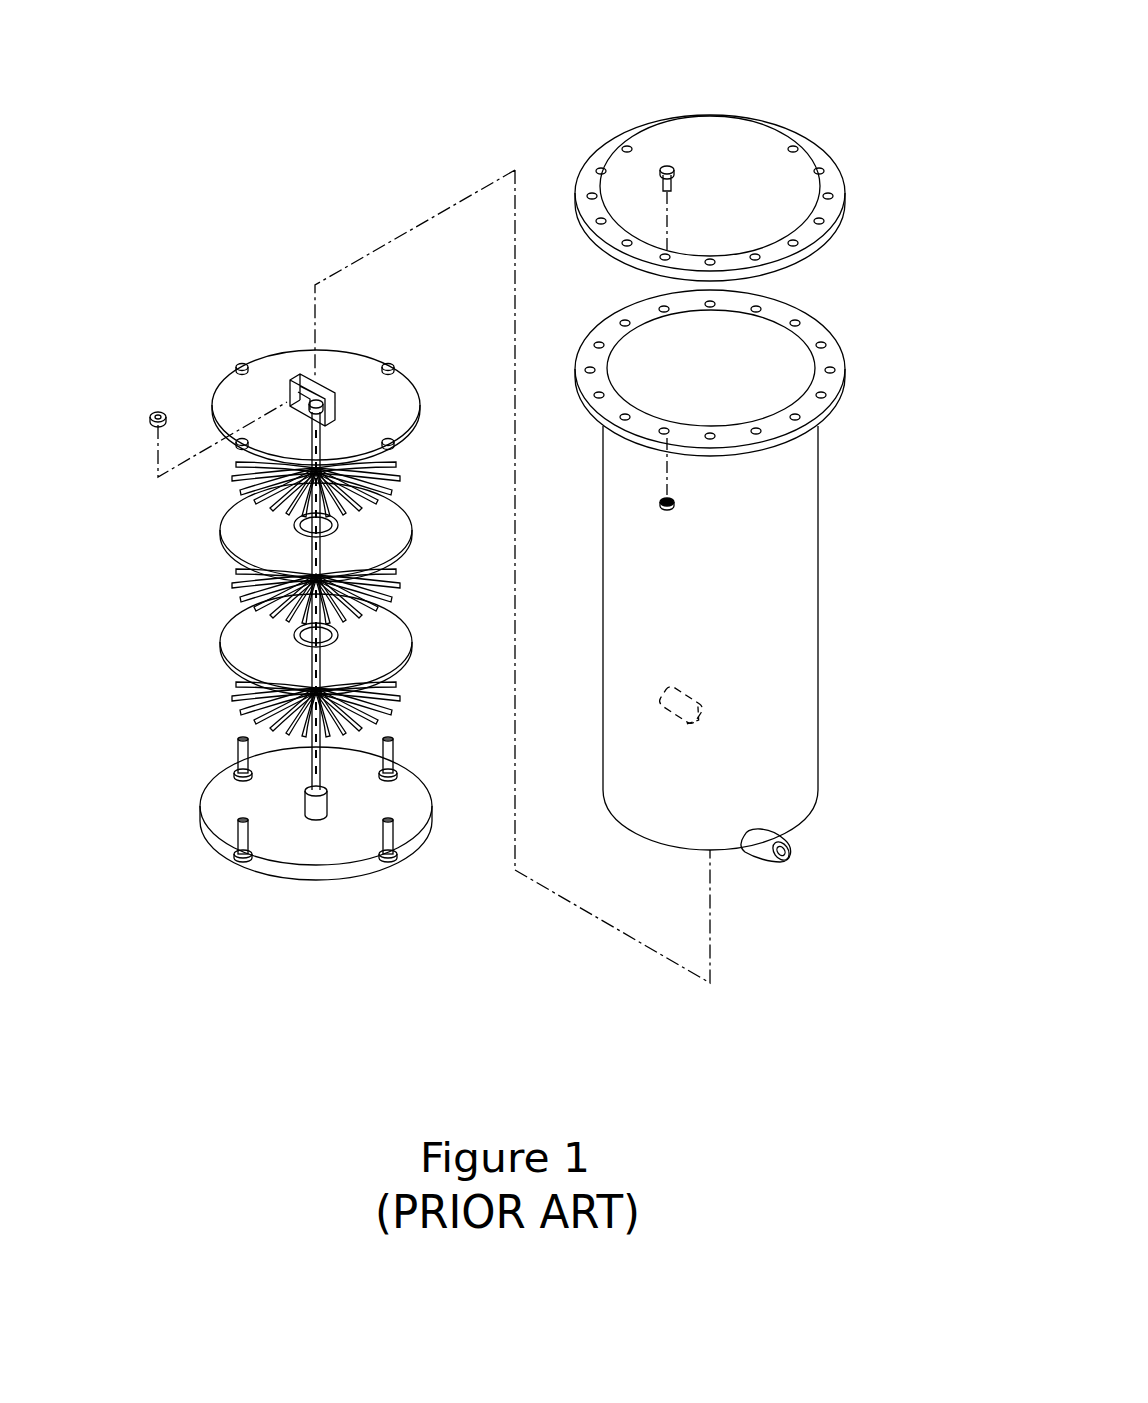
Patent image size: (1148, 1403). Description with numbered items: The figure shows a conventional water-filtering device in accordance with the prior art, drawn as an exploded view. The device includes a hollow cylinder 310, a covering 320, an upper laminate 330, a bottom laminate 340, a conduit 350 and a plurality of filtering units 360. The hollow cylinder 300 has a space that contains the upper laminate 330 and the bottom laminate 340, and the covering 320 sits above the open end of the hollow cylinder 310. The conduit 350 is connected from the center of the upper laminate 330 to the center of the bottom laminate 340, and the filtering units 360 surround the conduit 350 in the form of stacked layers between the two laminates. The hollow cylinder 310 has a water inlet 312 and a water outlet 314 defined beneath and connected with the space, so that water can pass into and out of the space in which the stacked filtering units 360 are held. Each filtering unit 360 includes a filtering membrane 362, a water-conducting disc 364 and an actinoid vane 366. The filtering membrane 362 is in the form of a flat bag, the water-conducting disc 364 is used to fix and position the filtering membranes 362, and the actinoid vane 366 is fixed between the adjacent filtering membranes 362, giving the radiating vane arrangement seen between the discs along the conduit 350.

The hollow cylinder 300 is at (450, 892).
The hollow cylinder 310 is at (818, 745).
The water inlet 312 is at (775, 865).
The water outlet 314 is at (658, 703).
The covering 320 is at (772, 120).
The upper laminate 330 is at (230, 375).
The bottom laminate 340 is at (210, 856).
The conduit 350 is at (320, 742).
The filtering unit 360 is at (274, 599).
The filtering membrane 362 is at (230, 525).
The water-conducting disc 364 is at (408, 545).
The actinoid vane 366 is at (205, 550).